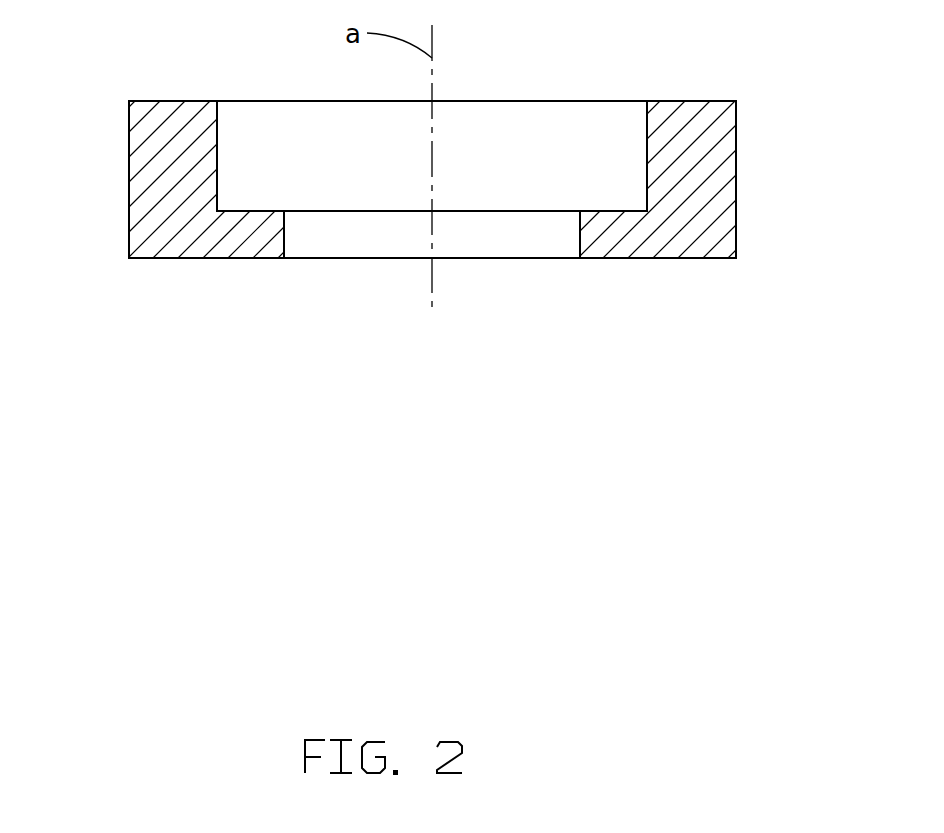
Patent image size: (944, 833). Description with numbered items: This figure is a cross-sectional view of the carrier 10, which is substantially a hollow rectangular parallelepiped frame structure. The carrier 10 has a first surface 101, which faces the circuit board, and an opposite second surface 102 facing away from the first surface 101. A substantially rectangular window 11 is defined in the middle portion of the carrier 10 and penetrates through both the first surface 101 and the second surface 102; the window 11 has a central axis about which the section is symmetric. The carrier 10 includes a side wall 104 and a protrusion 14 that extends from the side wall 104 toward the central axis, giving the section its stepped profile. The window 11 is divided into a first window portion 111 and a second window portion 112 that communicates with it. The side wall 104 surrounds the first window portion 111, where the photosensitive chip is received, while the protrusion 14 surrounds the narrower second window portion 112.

The carrier 10 is at (170, 235).
The first surface 101 is at (168, 100).
The second surface 102 is at (195, 262).
The side wall 104 is at (217, 168).
The window 11 is at (453, 182).
The first window portion 111 is at (560, 130).
The second window portion 112 is at (536, 280).
The protrusion 14 is at (250, 211).